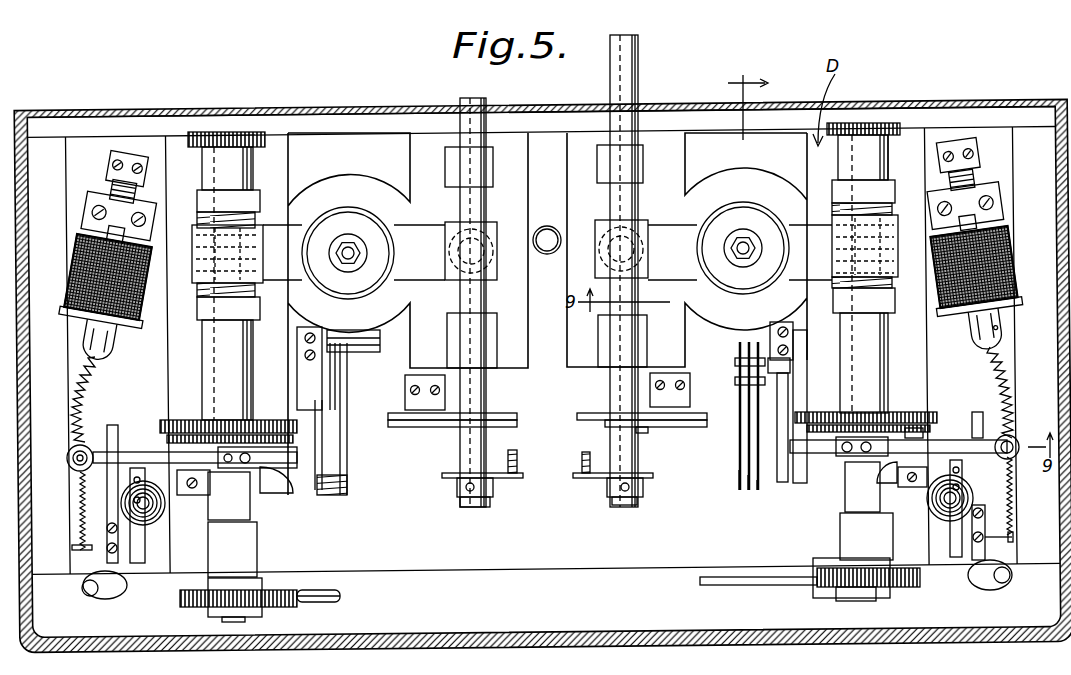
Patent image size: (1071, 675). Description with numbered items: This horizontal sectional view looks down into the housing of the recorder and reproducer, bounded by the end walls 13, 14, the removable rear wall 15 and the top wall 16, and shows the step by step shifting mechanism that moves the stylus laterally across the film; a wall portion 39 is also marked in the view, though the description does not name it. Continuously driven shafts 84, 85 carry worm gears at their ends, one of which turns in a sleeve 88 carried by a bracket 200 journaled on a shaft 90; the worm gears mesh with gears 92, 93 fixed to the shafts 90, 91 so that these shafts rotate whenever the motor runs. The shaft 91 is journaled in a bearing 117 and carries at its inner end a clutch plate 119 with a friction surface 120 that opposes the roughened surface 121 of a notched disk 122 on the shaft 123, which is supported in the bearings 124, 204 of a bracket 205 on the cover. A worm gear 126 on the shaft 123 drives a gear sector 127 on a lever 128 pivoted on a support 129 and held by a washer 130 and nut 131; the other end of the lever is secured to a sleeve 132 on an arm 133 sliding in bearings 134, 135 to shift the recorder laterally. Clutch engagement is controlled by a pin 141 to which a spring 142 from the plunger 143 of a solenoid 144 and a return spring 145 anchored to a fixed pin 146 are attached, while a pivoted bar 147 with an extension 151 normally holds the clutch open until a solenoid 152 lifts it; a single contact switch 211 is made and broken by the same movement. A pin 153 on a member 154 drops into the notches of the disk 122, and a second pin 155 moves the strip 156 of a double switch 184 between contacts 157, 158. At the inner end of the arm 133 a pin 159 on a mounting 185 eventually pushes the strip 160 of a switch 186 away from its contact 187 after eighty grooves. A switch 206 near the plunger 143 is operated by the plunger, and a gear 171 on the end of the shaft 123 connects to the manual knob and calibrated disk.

The end wall 13 is at (1058, 180).
The end wall 14 is at (68, 238).
The removable rear wall 15 is at (615, 635).
The top wall 16 is at (528, 560).
The top wall 39 is at (952, 94).
The shaft 84 is at (315, 600).
The shaft 85 is at (765, 583).
The sleeve 88 is at (210, 582).
The shaft 90 is at (245, 620).
The shaft 91 is at (872, 598).
The gear 92 is at (900, 587).
The gear 93 is at (190, 605).
The bearing 117 is at (955, 532).
The clutch plate 119 is at (920, 440).
The friction surface 120 is at (932, 418).
The roughened surface 121 is at (905, 412).
The notched disk 122 is at (935, 400).
The shaft 123 is at (878, 355).
The bearing 124 is at (893, 157).
The worm gear 126 is at (832, 237).
The gear sector 127 is at (832, 255).
The lever 128 is at (788, 222).
The support 129 is at (725, 212).
The washer 130 is at (735, 215).
The nut 131 is at (740, 260).
The sleeve 132 is at (597, 222).
The arm 133 is at (636, 195).
The bearing 134 is at (643, 352).
The bearing 135 is at (647, 152).
The pin 141 is at (1012, 442).
The spring 142 is at (1005, 385).
The plunger 143 is at (1000, 322).
The solenoid 144 is at (981, 206).
The spring 145 is at (1010, 492).
The fixed pin 146 is at (1012, 537).
The bar 147 is at (888, 560).
The extension 151 is at (972, 585).
The solenoid 152 is at (930, 497).
The pin 153 is at (797, 410).
The member 154 is at (790, 380).
The pin 155 is at (778, 485).
The strip 156 is at (757, 488).
The contact 157 is at (738, 465).
The contact 158 is at (747, 478).
The pin 159 is at (582, 462).
The strip 160 is at (595, 403).
The gear 171 is at (862, 123).
The double switch 184 is at (738, 352).
The mounting 185 is at (607, 490).
The switch 186 is at (683, 430).
The contact 187 is at (640, 428).
The bracket 200 is at (826, 596).
The bearing 204 is at (895, 390).
The bracket 205 is at (428, 432).
The switch 206 is at (975, 165).
The single contact switch 211 is at (990, 418).